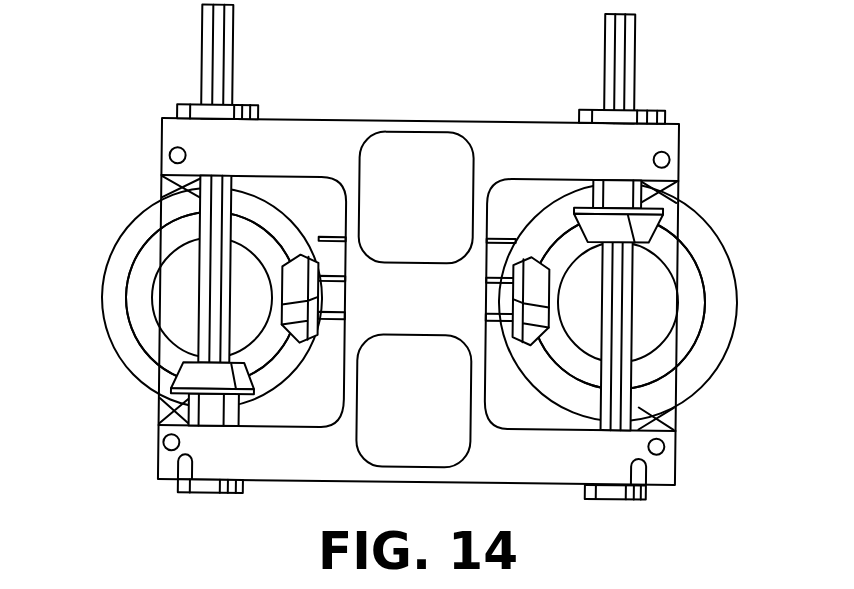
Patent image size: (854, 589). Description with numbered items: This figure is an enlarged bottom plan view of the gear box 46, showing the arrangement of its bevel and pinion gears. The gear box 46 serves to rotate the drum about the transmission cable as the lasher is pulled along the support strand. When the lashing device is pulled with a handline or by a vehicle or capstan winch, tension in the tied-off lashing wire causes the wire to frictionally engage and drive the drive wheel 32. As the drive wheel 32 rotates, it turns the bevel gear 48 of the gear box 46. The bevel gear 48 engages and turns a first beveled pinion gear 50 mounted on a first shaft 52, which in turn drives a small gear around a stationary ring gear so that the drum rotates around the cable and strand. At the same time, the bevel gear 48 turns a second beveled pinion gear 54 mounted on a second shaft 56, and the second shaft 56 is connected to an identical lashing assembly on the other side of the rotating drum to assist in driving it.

The drive wheel 32 is at (140, 370).
The gear box 46 is at (456, 469).
The bevel gear 48 is at (153, 248).
The first beveled pinion gear 50 is at (243, 400).
The first shaft 52 is at (224, 70).
The second beveled pinion gear 54 is at (300, 280).
The second shaft 56 is at (328, 305).